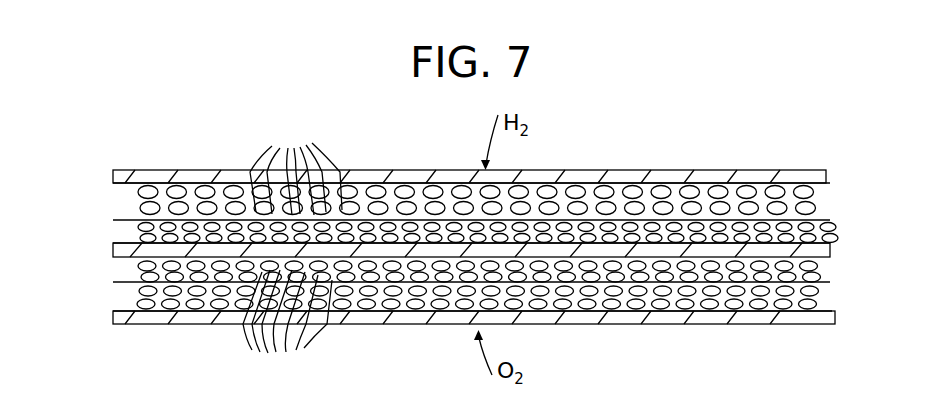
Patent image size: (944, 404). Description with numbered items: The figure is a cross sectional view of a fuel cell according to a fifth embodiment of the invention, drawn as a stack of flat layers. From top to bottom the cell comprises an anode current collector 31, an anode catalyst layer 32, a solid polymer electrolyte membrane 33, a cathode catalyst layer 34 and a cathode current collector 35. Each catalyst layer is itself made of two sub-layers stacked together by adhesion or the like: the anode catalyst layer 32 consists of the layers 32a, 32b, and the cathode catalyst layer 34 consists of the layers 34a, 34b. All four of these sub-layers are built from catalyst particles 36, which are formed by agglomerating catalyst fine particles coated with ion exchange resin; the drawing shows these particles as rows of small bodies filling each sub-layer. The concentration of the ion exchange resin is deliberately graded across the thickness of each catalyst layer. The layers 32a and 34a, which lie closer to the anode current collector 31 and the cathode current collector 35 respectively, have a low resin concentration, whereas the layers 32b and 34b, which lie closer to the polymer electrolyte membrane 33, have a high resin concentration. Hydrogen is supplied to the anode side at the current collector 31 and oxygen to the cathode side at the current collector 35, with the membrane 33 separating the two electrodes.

The anode current collector 31 is at (681, 172).
The anode catalyst layer 32 is at (463, 215).
The anode catalyst sub-layer closer to the anode current collector 32a is at (106, 181).
The anode catalyst sub-layer closer to the polymer electrolyte membrane 32b is at (106, 220).
The solid polymer electrolyte membrane 33 is at (832, 253).
The cathode catalyst layer 34 is at (462, 288).
The cathode catalyst sub-layer closer to the cathode current collector 34a is at (106, 285).
The cathode catalyst sub-layer closer to the polymer electrolyte membrane 34b is at (106, 256).
The cathode current collector 35 is at (700, 323).
The catalyst particles 36 is at (292, 249).